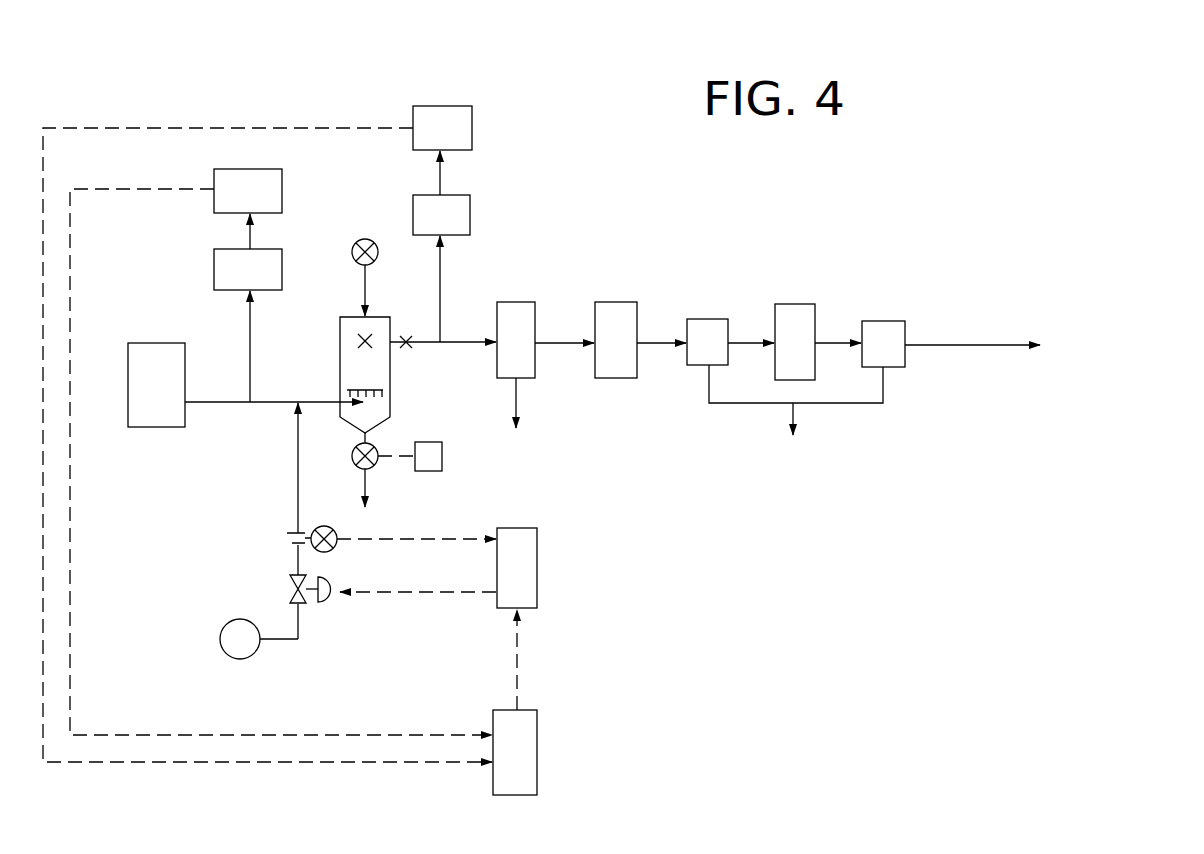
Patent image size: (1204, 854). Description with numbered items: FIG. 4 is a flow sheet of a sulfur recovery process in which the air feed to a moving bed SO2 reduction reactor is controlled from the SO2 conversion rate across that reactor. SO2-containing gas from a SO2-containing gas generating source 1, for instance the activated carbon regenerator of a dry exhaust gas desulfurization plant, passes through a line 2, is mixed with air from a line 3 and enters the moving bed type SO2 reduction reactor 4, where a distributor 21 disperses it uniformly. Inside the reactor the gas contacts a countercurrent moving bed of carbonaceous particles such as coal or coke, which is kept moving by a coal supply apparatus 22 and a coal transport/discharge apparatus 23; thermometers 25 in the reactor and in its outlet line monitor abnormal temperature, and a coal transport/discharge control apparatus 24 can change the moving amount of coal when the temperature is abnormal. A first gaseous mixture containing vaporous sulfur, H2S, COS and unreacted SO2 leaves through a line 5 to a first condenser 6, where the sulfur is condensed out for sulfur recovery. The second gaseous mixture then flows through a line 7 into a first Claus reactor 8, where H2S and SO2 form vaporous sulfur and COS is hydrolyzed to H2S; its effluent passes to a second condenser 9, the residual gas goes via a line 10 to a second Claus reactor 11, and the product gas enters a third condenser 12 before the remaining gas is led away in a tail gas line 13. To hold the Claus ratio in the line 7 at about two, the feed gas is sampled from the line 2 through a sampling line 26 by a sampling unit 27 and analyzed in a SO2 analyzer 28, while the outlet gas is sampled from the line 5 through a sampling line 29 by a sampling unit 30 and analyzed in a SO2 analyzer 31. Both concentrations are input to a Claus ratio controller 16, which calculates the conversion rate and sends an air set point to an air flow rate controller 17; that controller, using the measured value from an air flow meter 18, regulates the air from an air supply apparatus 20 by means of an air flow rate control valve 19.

The SO2-containing gas generating source 1 is at (158, 343).
The line 2 is at (220, 404).
The line 3 is at (298, 465).
The moving bed type SO2 reduction reactor 4 is at (390, 386).
The line 5 is at (464, 340).
The first condenser 6 is at (520, 302).
The line 7 is at (554, 341).
The first Claus reactor 8 is at (613, 302).
The second condenser 9 is at (707, 319).
The line 10 is at (743, 341).
The second Claus reactor 11 is at (793, 304).
The third condenser 12 is at (882, 321).
The tail gas line 13 is at (950, 344).
The Claus ratio controller 16 is at (537, 742).
The air flow rate controller 17 is at (537, 565).
The air flow meter 18 is at (288, 536).
The air flow rate control valve 19 is at (290, 590).
The air supply apparatus 20 is at (220, 639).
The distributor 21 is at (352, 390).
The coal supply apparatus 22 is at (365, 239).
The coal transport/discharge apparatus 23 is at (355, 461).
The coal transport/discharge control apparatus 24 is at (431, 442).
The thermometers 25 is at (352, 343).
The sampling line 26 is at (250, 338).
The sampling unit 27 is at (214, 264).
The SO2 analyzer 28 is at (282, 190).
The sampling line 29 is at (440, 258).
The sampling unit 30 is at (470, 214).
The SO2 analyzer 31 is at (472, 128).